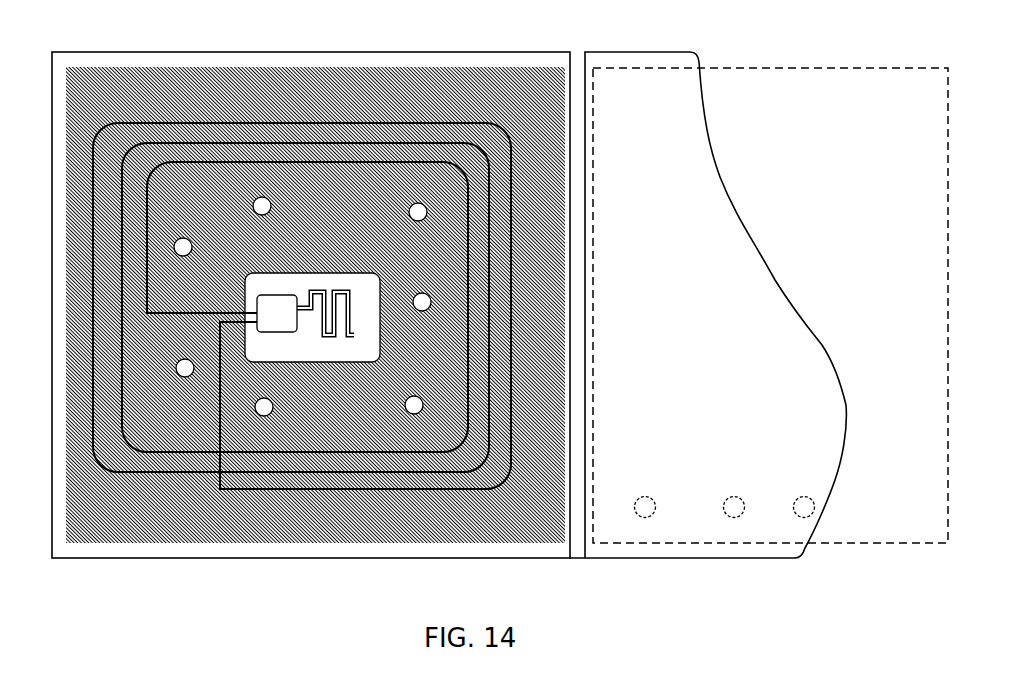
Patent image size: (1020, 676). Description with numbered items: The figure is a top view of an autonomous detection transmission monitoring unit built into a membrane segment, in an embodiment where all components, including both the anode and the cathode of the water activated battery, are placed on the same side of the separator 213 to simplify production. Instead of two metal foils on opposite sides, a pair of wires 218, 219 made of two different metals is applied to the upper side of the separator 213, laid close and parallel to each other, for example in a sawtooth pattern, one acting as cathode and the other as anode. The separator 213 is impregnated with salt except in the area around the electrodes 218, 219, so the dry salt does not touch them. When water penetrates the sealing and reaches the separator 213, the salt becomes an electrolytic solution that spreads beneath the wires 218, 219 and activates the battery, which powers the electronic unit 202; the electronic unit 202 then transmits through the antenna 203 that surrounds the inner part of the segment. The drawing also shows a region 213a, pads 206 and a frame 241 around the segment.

The electronic unit 202 is at (281, 326).
The antenna 203 is at (216, 420).
The via / contact pad 206 is at (272, 188).
The separator 213 is at (205, 97).
The conductive layer extension 213a is at (674, 176).
The wire 218 is at (324, 281).
The wire 219 is at (337, 278).
The substrate frame 241 is at (480, 59).